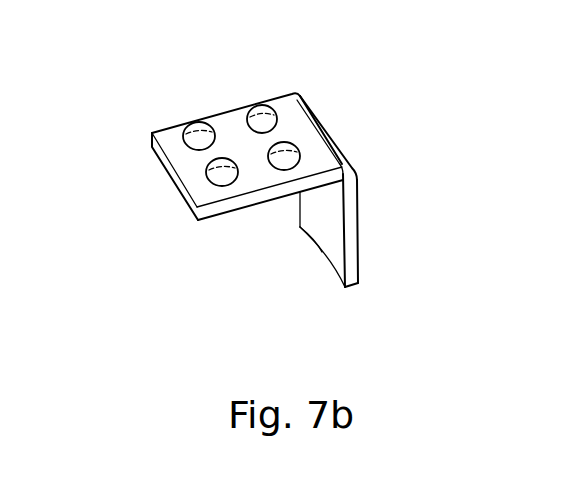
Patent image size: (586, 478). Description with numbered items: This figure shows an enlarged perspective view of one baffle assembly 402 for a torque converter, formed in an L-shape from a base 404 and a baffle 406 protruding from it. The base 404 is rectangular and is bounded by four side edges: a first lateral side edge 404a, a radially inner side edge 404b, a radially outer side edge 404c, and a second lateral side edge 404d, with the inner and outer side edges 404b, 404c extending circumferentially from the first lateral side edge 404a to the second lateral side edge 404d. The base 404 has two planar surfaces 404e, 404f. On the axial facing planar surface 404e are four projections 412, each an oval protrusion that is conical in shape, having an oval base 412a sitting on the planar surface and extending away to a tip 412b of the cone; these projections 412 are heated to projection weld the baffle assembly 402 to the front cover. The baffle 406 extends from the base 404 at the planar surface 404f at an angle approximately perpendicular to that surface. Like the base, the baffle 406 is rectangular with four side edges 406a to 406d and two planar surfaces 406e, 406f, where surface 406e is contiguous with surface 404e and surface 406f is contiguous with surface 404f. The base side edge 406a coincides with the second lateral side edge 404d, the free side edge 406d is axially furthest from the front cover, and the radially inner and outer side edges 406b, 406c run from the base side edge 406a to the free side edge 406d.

The baffle assembly 402 is at (250, 189).
The base 404 is at (249, 165).
The first lateral side edge 404a is at (151, 148).
The radially inner side edge 404b is at (232, 106).
The radially outer side edge 404c is at (258, 194).
The second lateral side edge 404d is at (345, 153).
The planar surface 404e is at (232, 123).
The planar surface 404f is at (222, 219).
The baffle 406 is at (348, 211).
The base side edge 406a is at (315, 108).
The radially inner side edge 406b is at (298, 228).
The radially outer side edge 406c is at (353, 265).
The free side edge 406d is at (332, 272).
The planar surface 406e is at (358, 210).
The planar surface 406f is at (320, 256).
The projections 412 is at (196, 170).
The oval base 412a is at (197, 192).
The tip 412b is at (212, 167).